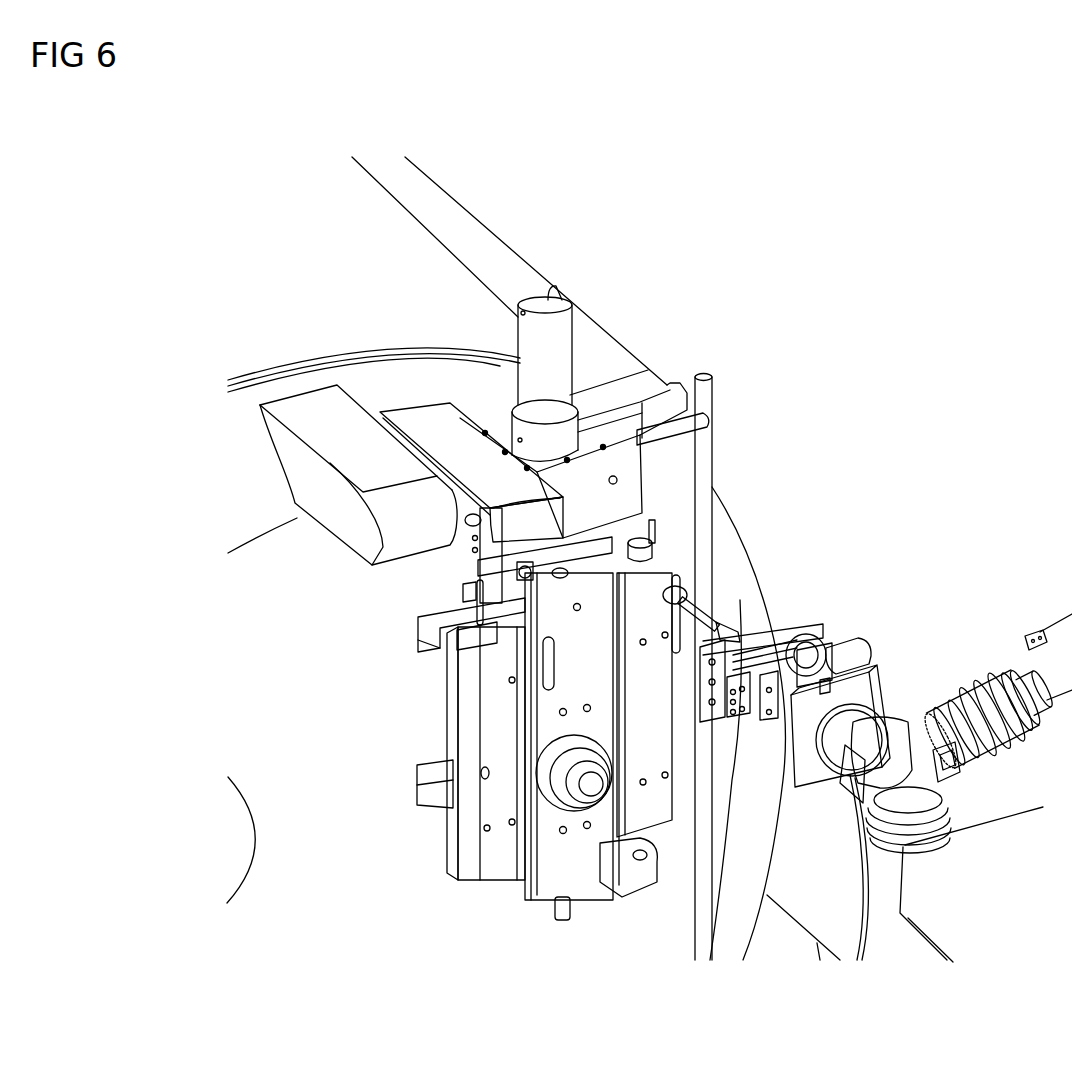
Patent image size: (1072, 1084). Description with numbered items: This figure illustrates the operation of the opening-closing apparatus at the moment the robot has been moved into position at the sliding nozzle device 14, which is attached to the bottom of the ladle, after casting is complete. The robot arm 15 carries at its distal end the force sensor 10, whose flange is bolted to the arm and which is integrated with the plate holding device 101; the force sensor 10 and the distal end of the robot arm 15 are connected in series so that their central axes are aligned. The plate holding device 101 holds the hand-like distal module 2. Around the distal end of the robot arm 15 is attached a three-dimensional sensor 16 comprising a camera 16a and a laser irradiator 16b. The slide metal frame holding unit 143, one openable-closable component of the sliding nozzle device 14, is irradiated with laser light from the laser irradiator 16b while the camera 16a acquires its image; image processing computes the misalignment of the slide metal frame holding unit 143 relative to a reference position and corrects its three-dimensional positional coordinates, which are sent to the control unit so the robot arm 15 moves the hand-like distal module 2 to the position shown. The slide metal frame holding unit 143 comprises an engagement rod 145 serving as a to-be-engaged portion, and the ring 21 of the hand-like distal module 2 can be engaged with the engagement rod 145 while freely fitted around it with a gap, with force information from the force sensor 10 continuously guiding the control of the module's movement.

The hand-like distal module 2 is at (717, 617).
The ring 21 is at (697, 590).
The force sensor 10 is at (855, 712).
The sliding nozzle device 14 is at (433, 713).
The slide metal frame holding unit 143 is at (662, 573).
The engagement rod 145 is at (683, 573).
The robot arm 15 is at (1022, 657).
The three-dimensional sensor 16 is at (828, 624).
The camera 16a is at (823, 627).
The laser irradiator 16b is at (858, 643).
The plate holding device 101 is at (714, 720).